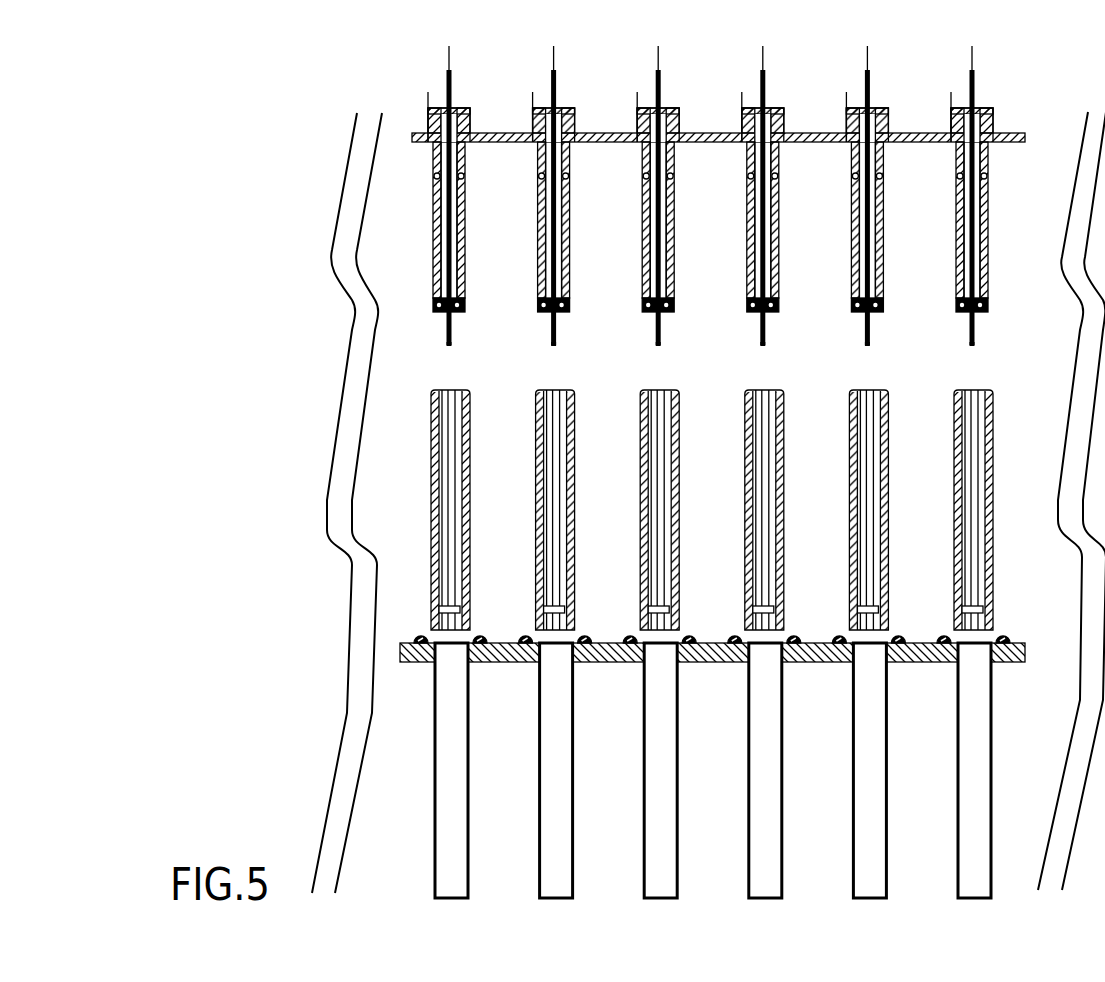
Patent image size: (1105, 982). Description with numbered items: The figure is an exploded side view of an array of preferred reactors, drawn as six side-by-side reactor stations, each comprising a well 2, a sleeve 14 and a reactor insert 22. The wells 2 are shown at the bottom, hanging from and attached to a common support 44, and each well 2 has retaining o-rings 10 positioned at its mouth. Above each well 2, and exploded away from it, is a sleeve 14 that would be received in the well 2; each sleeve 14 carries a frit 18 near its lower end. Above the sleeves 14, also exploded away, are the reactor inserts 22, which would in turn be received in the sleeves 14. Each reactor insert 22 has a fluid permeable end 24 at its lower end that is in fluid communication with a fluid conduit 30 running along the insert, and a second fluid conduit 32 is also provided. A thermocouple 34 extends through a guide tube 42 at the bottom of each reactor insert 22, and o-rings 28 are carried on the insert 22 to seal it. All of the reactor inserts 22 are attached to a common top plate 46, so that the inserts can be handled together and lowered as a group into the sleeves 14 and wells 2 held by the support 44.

The well 2 is at (733, 770).
The retaining o-ring 10 is at (730, 612).
The sleeve 14 is at (737, 510).
The frit 18 is at (733, 577).
The reactor insert 22 is at (735, 206).
The fluid permeable end 24 is at (735, 305).
The o-ring 28 is at (734, 179).
The fluid conduit 30 is at (725, 173).
The fluid conduit 32 is at (428, 93).
The thermocouple 34 is at (734, 362).
The guide tube 42 is at (742, 332).
The support 44 is at (715, 682).
The top plate 46 is at (720, 112).